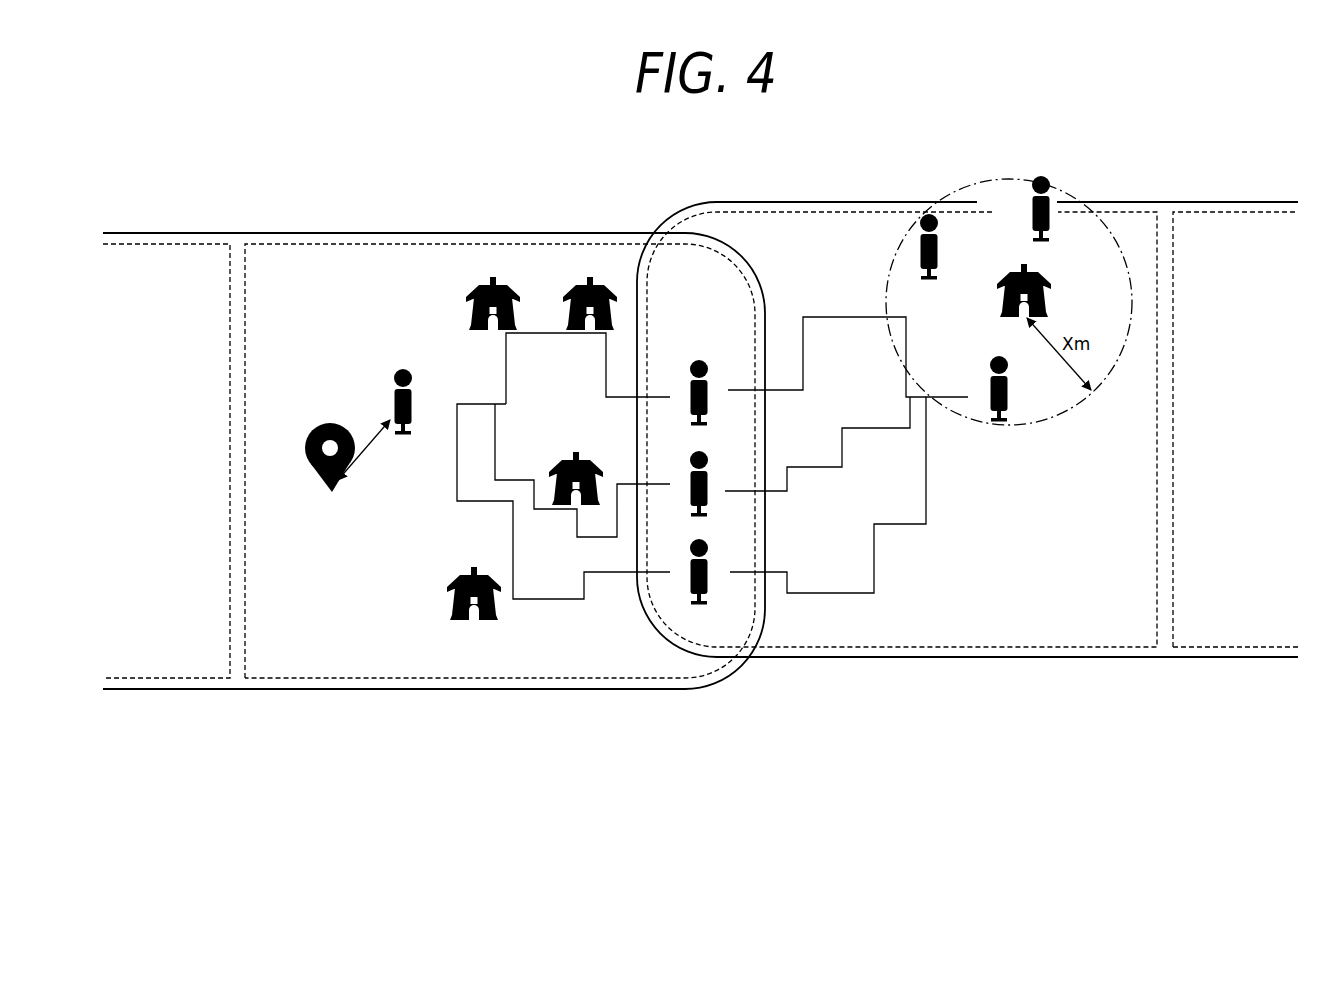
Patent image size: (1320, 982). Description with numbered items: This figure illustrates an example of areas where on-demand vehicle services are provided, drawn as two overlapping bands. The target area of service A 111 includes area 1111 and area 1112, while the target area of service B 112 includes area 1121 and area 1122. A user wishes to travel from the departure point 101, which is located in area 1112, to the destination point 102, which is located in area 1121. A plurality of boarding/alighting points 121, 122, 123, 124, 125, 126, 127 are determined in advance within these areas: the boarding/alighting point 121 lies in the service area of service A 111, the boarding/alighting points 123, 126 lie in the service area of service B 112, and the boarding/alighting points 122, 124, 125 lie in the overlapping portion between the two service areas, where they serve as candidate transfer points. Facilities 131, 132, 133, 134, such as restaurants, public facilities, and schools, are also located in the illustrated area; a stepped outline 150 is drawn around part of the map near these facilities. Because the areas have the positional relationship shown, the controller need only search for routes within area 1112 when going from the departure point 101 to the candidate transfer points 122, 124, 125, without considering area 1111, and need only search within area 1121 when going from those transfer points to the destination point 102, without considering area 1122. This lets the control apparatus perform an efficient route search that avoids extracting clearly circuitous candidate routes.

The departure point 101 is at (308, 448).
The destination point 102 is at (997, 300).
The service A 111 is at (440, 690).
The service B 112 is at (985, 658).
The area 1111 is at (140, 233).
The area 1112 is at (322, 233).
The area 1121 is at (790, 203).
The area 1122 is at (1236, 212).
The boarding/alighting point 121 is at (395, 392).
The boarding/alighting point 122 is at (708, 386).
The boarding/alighting point 123 is at (1010, 397).
The boarding/alighting point 124 is at (708, 477).
The boarding/alighting point 125 is at (708, 566).
The boarding/alighting point 126 is at (940, 248).
The boarding/alighting point 127 is at (1032, 207).
The facility 131 is at (480, 290).
The facility 132 is at (583, 290).
The facility 133 is at (550, 470).
The facility 134 is at (452, 583).
The area 150 is at (548, 600).